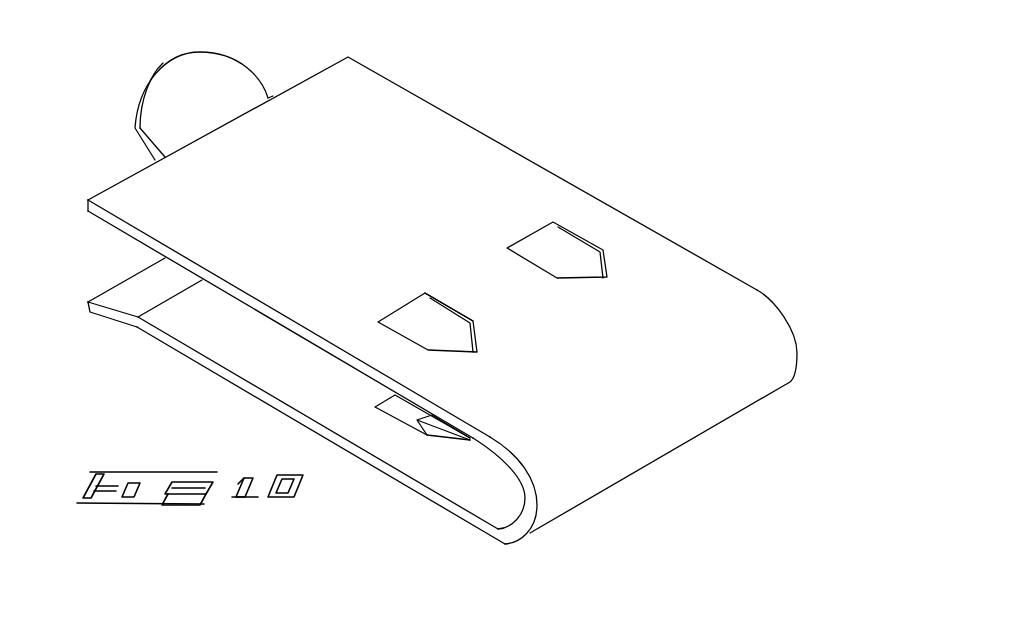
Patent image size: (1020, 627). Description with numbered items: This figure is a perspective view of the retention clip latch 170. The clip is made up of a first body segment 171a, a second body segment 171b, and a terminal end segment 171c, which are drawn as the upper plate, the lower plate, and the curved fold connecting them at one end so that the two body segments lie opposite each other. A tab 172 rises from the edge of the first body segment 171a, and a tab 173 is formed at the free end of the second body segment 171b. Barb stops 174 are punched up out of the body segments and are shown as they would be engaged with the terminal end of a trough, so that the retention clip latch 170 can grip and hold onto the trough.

The retention clip latch 170 is at (574, 160).
The first body segment 171a is at (362, 211).
The second body segment 171b is at (280, 352).
The terminal end segment 171c is at (692, 437).
The tab 172 is at (212, 112).
The tab 173 is at (132, 293).
The barb stops 174 is at (438, 333).